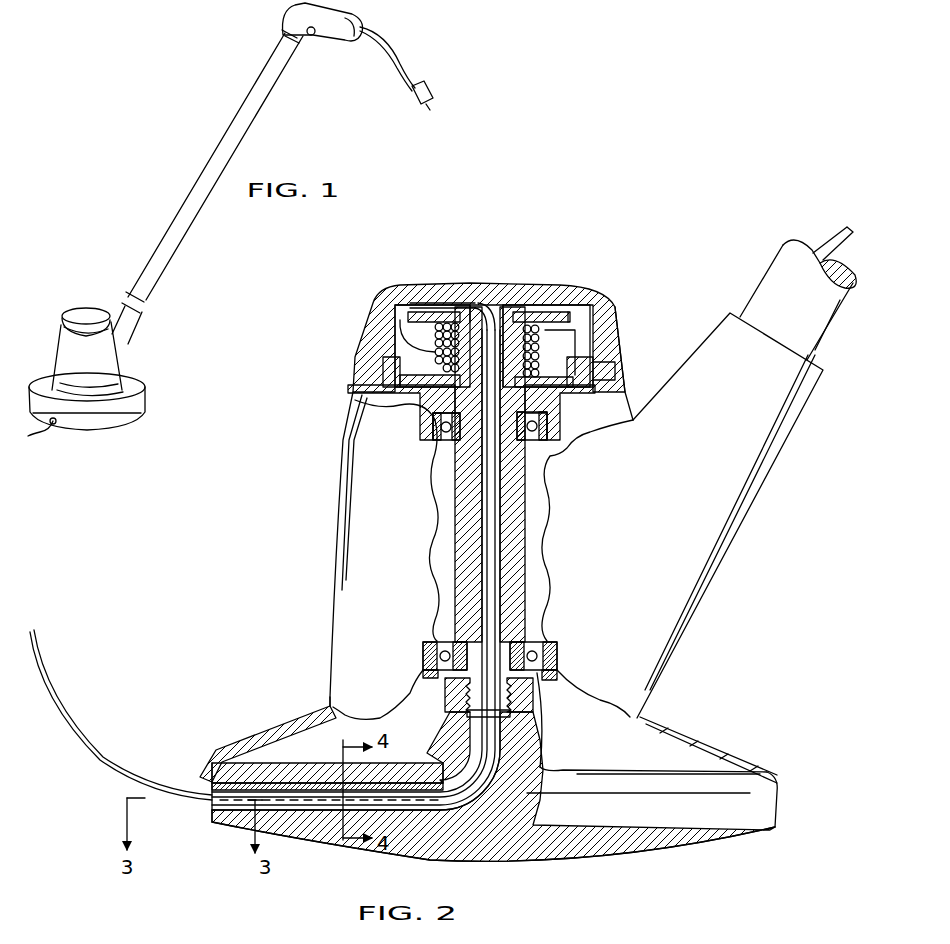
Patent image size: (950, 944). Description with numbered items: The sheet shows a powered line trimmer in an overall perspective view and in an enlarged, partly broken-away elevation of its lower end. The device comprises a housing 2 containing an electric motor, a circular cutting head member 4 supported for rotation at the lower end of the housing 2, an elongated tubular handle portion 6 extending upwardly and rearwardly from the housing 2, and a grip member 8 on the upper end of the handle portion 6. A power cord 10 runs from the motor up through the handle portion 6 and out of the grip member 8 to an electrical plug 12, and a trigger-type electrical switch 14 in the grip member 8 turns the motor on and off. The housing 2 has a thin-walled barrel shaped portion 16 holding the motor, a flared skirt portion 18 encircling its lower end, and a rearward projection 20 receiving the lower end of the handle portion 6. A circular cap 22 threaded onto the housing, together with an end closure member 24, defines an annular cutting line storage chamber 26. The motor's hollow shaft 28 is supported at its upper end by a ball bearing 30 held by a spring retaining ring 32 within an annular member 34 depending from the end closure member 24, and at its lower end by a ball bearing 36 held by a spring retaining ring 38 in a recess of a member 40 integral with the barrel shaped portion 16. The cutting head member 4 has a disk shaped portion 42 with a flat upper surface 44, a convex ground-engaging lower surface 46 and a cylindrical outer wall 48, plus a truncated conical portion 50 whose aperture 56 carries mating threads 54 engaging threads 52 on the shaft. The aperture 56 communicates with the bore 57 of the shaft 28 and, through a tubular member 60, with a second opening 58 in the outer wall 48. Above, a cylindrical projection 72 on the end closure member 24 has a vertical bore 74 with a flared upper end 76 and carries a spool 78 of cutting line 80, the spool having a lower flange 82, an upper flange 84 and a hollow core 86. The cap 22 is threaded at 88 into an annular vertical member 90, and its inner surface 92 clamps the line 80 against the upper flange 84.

In FIG. 1, the housing 2 is at (51, 363).
In FIG. 2, the housing 2 is at (322, 583).
In FIG. 1, the cutting head member 4 is at (96, 435).
In FIG. 2, the cutting head member 4 is at (613, 858).
In FIG. 1, the tubular handle portion 6 is at (193, 190).
In FIG. 2, the tubular handle portion 6 is at (783, 270).
In FIG. 1, the grip member 8 is at (340, 37).
In FIG. 1, the power cord 10 is at (380, 37).
In FIG. 2, the power cord 10 is at (833, 228).
In FIG. 1, the electrical plug 12 is at (428, 88).
In FIG. 1, the electrical switch 14 is at (308, 36).
In FIG. 2, the barrel shaped portion 16 is at (343, 512).
In FIG. 2, the flared skirt portion 18 is at (282, 718).
In FIG. 1, the projection 20 is at (126, 338).
In FIG. 2, the projection 20 is at (710, 342).
In FIG. 1, the circular cap 22 is at (84, 311).
In FIG. 2, the circular cap 22 is at (436, 286).
In FIG. 2, the end closure member 24 is at (400, 394).
In FIG. 2, the cutting line storage chamber 26 is at (580, 329).
In FIG. 2, the hollow shaft 28 is at (458, 536).
In FIG. 2, the ball bearing 30 is at (433, 452).
In FIG. 2, the spring retaining ring 32 is at (586, 418).
In FIG. 2, the annular member 34 is at (567, 442).
In FIG. 2, the ball bearing 36 is at (433, 635).
In FIG. 2, the spring retaining ring 38 is at (557, 682).
In FIG. 2, the member 40 is at (548, 640).
In FIG. 2, the disk shaped portion 42 is at (710, 803).
In FIG. 2, the upper surface 44 is at (603, 771).
In FIG. 2, the lower surface 46 is at (510, 863).
In FIG. 2, the outer wall 48 is at (774, 808).
In FIG. 2, the truncated conical portion 50 is at (530, 727).
In FIG. 2, the threads 52 is at (450, 698).
In FIG. 2, the mating threads 54 is at (528, 693).
In FIG. 2, the aperture 56 is at (470, 738).
In FIG. 2, the bore 57 is at (497, 523).
In FIG. 2, the second opening 58 is at (201, 809).
In FIG. 2, the tubular member 60 is at (308, 779).
In FIG. 2, the cylindrical projection 72 is at (513, 312).
In FIG. 2, the vertical bore 74 is at (498, 320).
In FIG. 2, the flared upper end 76 is at (505, 318).
In FIG. 2, the spool 78 is at (562, 369).
In FIG. 1, the cutting line 80 is at (50, 427).
In FIG. 2, the cutting line 80 is at (408, 320).
In FIG. 2, the lower flange 82 is at (398, 360).
In FIG. 2, the upper flange 84 is at (408, 316).
In FIG. 2, the hollow core 86 is at (470, 320).
In FIG. 2, the threads 88 is at (603, 370).
In FIG. 2, the annular vertical member 90 is at (598, 367).
In FIG. 2, the inner surface 92 is at (572, 312).